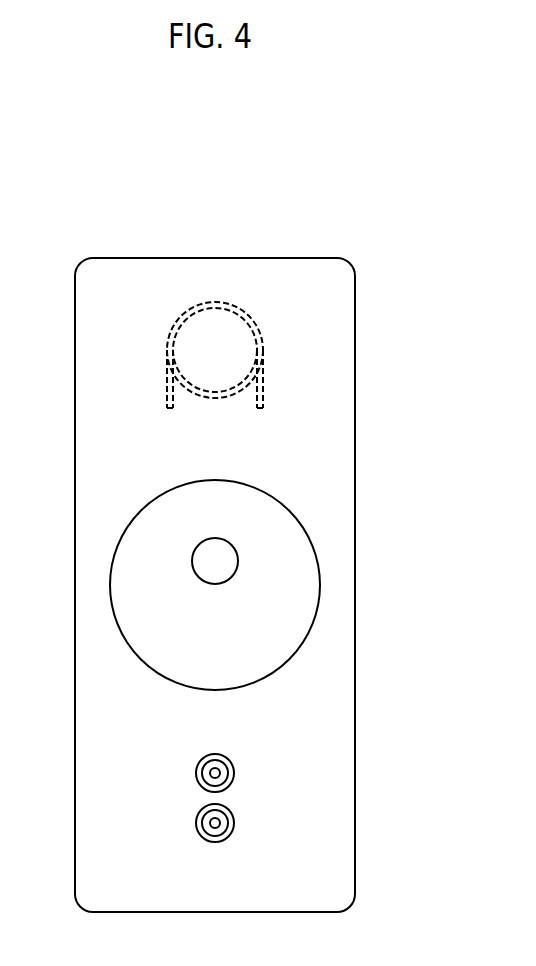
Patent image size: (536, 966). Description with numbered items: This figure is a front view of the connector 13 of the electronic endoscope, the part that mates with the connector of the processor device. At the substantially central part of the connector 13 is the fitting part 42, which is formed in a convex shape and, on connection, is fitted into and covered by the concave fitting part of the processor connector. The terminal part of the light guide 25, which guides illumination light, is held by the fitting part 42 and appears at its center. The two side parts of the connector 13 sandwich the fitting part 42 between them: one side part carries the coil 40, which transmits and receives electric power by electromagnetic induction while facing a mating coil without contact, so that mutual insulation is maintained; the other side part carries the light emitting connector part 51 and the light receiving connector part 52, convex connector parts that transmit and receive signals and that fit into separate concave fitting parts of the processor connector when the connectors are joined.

The connector 13 is at (105, 257).
The coil 40 is at (215, 300).
The fitting part 42 is at (302, 598).
The light guide 25 is at (228, 559).
The light emitting connector part 51 is at (234, 773).
The light receiving connector part 52 is at (234, 823).